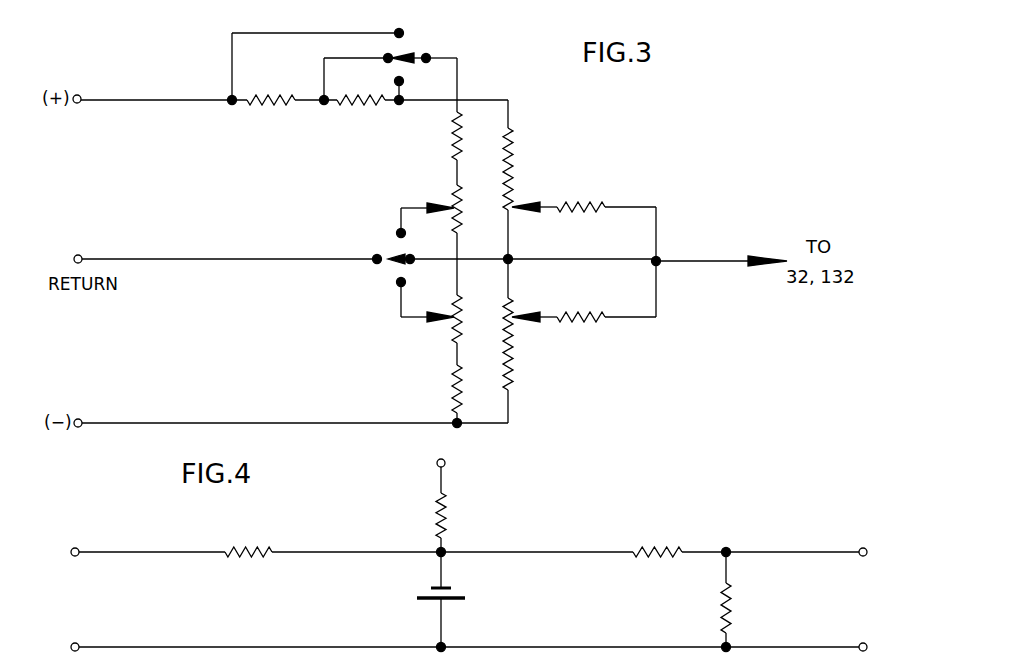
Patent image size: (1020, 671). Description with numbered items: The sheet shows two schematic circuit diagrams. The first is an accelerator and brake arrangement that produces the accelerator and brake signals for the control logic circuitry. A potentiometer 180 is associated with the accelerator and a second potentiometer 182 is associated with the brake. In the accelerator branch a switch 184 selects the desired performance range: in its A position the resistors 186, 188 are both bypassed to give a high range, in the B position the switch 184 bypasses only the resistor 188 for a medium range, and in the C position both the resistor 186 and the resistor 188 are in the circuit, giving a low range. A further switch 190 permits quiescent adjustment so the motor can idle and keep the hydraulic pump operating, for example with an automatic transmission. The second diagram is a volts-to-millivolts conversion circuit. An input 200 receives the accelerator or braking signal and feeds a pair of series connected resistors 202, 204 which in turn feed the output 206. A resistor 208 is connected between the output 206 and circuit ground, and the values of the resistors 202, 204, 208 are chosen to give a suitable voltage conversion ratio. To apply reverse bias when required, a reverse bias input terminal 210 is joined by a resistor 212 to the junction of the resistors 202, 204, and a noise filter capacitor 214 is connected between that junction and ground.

In FIG. 3, the potentiometer 180 is at (518, 152).
In FIG. 3, the potentiometer 182 is at (513, 348).
In FIG. 3, the switch 184 is at (418, 49).
In FIG. 3, the resistor 186 is at (272, 106).
In FIG. 3, the resistor 188 is at (366, 106).
In FIG. 3, the switch 190 is at (377, 255).
In FIG. 4, the input 200 is at (78, 548).
In FIG. 4, the resistor 202 is at (250, 548).
In FIG. 4, the resistor 204 is at (657, 548).
In FIG. 4, the output 206 is at (859, 548).
In FIG. 4, the resistor 208 is at (733, 601).
In FIG. 4, the reverse bias input terminal 210 is at (446, 464).
In FIG. 4, the resistor 212 is at (447, 508).
In FIG. 4, the noise filter capacitor 214 is at (466, 596).